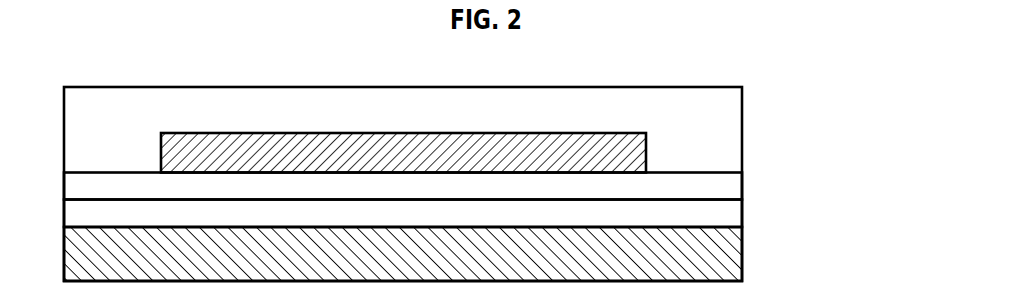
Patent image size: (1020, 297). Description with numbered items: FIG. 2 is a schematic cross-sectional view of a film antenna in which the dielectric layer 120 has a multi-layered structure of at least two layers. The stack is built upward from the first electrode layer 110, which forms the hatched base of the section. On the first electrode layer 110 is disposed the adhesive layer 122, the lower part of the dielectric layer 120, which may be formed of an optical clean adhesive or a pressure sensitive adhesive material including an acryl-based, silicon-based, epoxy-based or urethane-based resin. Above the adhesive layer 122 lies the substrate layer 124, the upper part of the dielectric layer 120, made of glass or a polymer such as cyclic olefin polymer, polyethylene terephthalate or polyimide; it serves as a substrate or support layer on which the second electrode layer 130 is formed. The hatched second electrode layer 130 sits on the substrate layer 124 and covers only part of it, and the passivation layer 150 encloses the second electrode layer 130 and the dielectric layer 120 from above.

The first electrode layer 110 is at (737, 252).
The dielectric layer 120 is at (488, 203).
The adhesive layer 122 is at (737, 212).
The substrate layer 124 is at (737, 183).
The second electrode layer 130 is at (647, 146).
The passivation layer 150 is at (735, 113).